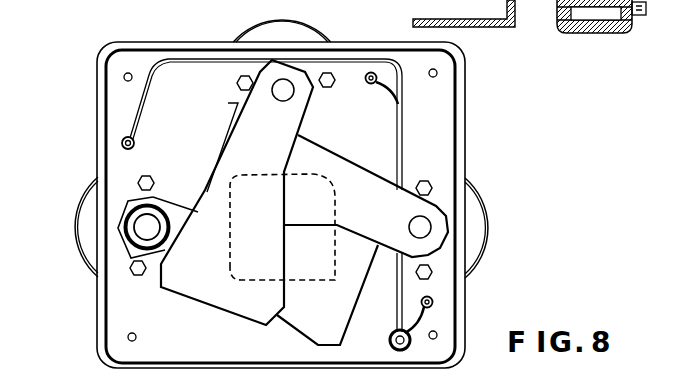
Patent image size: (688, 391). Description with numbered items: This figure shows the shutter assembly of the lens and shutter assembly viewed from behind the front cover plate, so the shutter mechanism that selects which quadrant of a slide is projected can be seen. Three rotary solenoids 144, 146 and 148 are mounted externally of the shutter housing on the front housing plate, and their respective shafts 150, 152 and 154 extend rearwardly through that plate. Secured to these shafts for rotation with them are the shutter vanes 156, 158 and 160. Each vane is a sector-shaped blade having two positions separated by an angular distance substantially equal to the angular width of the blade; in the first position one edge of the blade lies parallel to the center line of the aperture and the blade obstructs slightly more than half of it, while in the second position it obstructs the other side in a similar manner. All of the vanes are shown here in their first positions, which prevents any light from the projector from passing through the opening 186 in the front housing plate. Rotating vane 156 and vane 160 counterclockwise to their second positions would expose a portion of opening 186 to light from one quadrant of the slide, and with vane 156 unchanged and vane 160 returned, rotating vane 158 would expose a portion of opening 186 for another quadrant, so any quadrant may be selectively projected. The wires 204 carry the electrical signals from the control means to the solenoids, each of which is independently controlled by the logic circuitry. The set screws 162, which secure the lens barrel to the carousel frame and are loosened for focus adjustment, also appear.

The rotary solenoid 144 is at (304, 24).
The rotary solenoid 146 is at (91, 193).
The rotary solenoid 148 is at (488, 197).
The shaft 150 is at (287, 93).
The shaft 152 is at (162, 192).
The shaft 154 is at (416, 216).
The shutter vane 156 is at (213, 297).
The shutter vane 158 is at (340, 302).
The shutter vane 160 is at (315, 159).
The set screws 162 is at (537, 0).
The opening 186 is at (338, 204).
The wires 204 is at (404, 118).